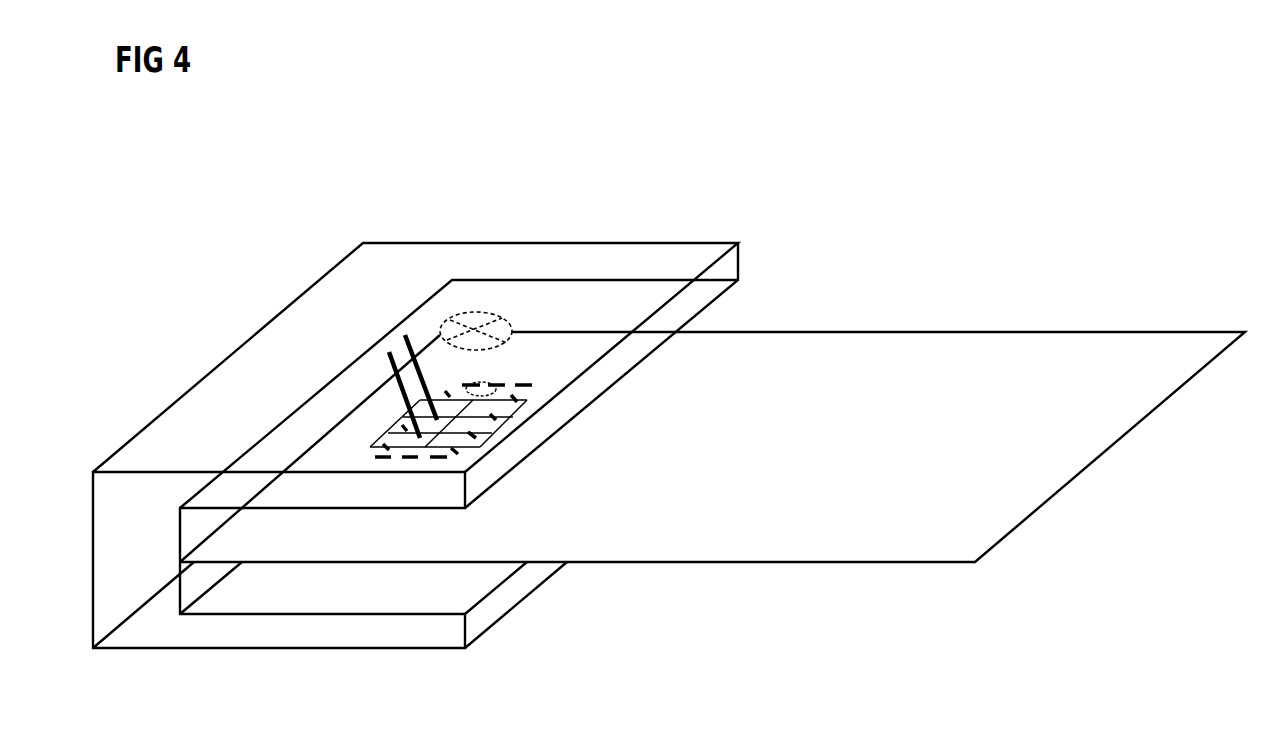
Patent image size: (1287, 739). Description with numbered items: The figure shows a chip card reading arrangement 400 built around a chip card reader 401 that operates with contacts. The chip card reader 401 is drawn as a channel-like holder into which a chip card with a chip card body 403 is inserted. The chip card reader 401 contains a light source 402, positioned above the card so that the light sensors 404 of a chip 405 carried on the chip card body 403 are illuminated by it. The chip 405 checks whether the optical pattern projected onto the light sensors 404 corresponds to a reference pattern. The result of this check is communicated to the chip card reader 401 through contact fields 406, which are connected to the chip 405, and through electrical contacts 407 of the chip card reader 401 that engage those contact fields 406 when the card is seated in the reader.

The chip card reading arrangement 400 is at (1183, 106).
The chip card reader 401 is at (247, 343).
The light source 402 is at (500, 318).
The chip card body 403 is at (1100, 331).
The light sensors 404 is at (473, 387).
The chip 405 is at (525, 385).
The contact fields 406 is at (508, 434).
The electrical contacts 407 is at (389, 401).